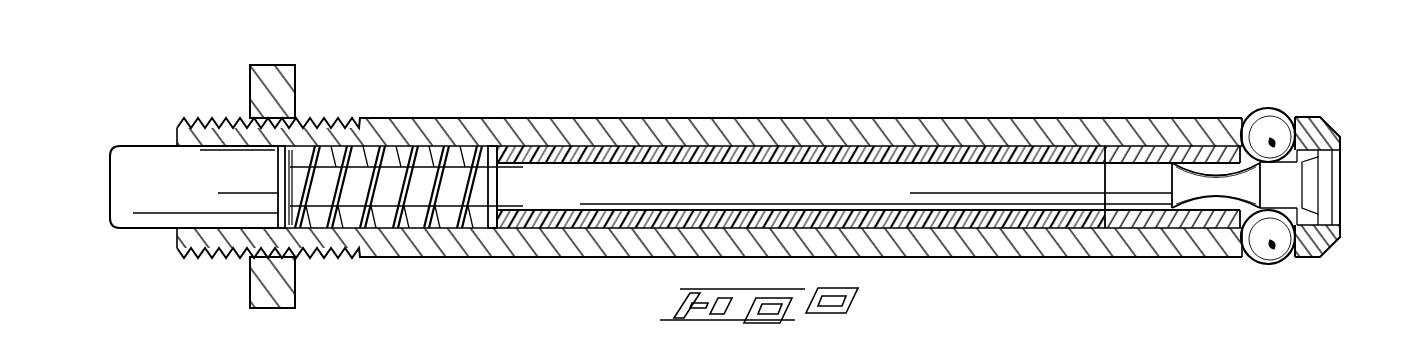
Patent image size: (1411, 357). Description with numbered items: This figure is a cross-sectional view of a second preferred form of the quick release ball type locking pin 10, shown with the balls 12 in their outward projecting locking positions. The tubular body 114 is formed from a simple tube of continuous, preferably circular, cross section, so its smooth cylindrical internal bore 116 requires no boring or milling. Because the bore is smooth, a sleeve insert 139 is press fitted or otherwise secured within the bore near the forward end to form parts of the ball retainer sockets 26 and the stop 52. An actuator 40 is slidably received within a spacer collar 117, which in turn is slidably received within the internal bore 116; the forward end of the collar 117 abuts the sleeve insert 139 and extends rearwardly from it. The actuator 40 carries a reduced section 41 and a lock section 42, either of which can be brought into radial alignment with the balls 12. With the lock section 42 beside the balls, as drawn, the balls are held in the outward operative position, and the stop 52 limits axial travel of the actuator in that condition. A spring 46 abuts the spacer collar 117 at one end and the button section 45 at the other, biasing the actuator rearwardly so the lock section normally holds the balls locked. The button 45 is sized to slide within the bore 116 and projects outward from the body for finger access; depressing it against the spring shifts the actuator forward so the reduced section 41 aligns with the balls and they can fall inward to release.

The ball type locking pin 10 is at (994, 76).
The retractable ball 12 is at (1265, 118).
The ball retainer socket 26 is at (1302, 130).
The actuator 40 is at (608, 185).
The reduced section 41 is at (1212, 187).
The lock section 42 is at (1288, 183).
The button section 45 is at (150, 175).
The spring 46 is at (403, 220).
The stop 52 is at (1318, 157).
The tubular body 114 is at (926, 258).
The internal bore 116 is at (457, 157).
The spacer collar 117 is at (855, 157).
The sleeve insert 139 is at (1155, 153).